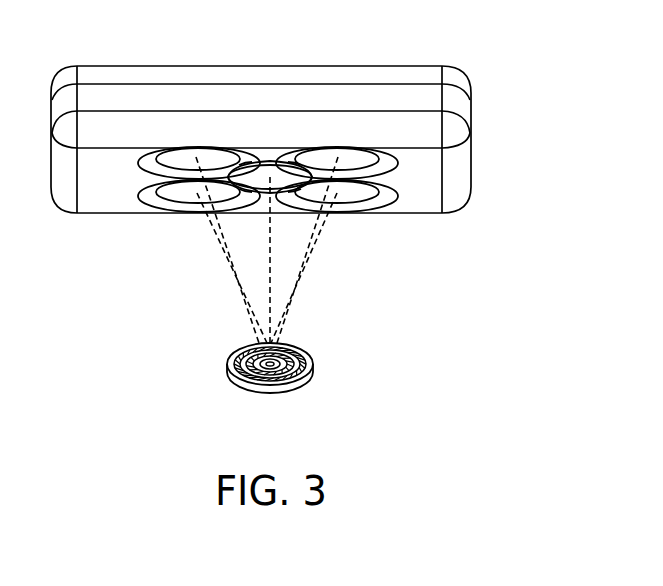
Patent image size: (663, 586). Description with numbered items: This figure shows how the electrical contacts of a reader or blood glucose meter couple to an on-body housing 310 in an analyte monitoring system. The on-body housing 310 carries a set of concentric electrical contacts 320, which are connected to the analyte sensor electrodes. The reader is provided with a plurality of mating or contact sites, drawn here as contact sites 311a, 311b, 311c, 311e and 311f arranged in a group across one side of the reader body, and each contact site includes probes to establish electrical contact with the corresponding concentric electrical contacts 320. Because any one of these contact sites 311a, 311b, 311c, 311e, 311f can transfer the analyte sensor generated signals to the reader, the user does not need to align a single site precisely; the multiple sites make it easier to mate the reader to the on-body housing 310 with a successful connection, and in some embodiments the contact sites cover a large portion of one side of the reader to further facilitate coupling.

The on-body housing 310 is at (235, 372).
The concentric electrical contacts 320 is at (300, 353).
The contact site 311a is at (378, 157).
The contact site 311b is at (189, 150).
The contact site 311c is at (165, 200).
The contact site 311e is at (370, 200).
The lens 311f is at (270, 167).